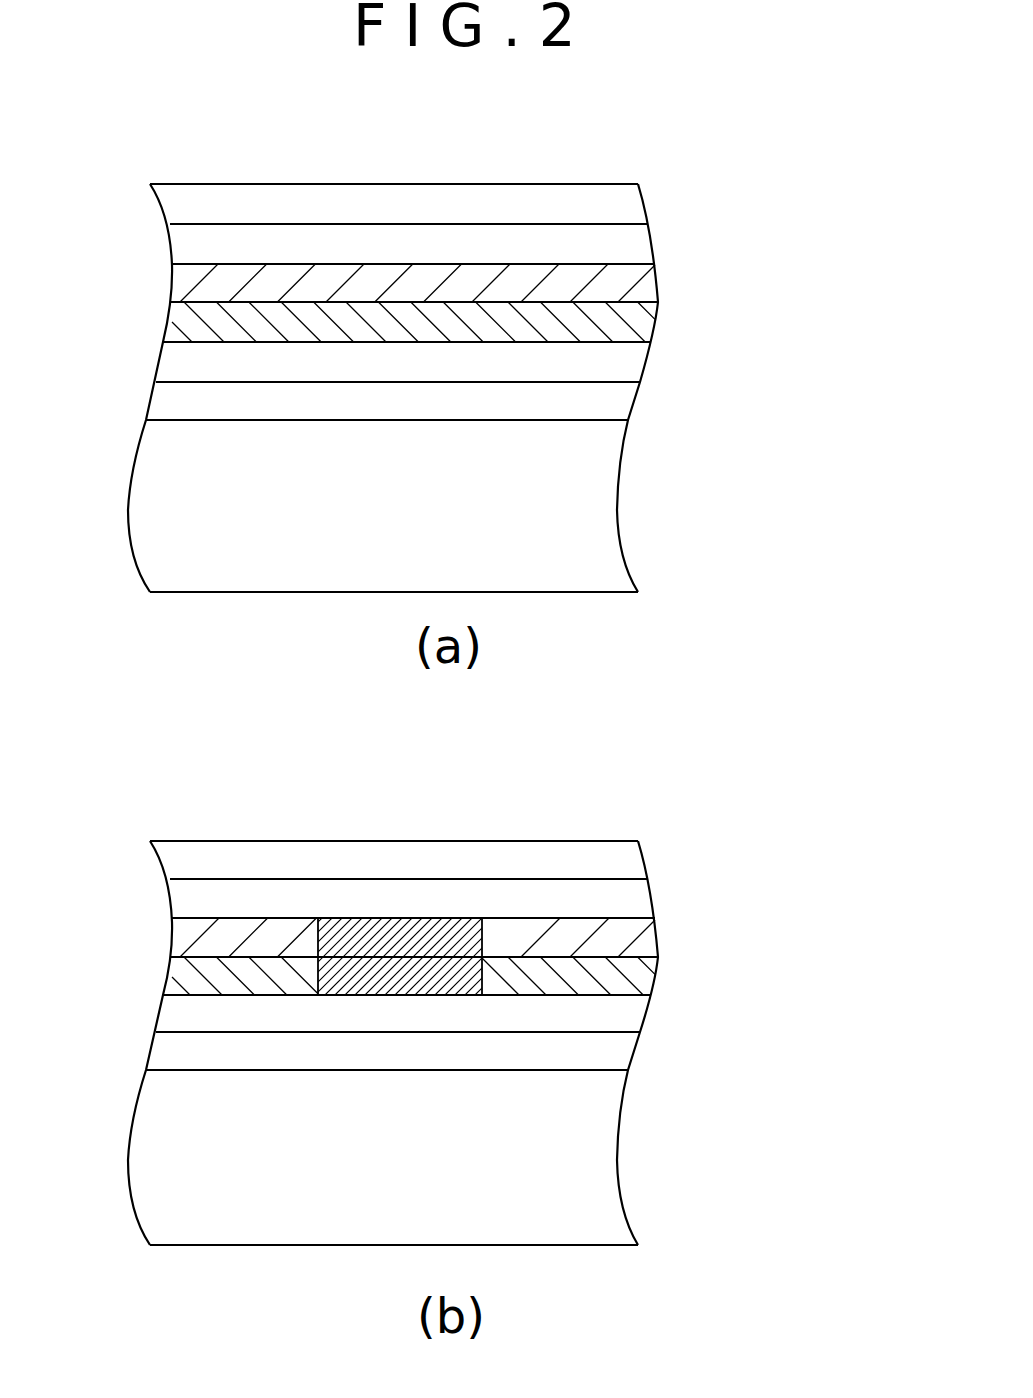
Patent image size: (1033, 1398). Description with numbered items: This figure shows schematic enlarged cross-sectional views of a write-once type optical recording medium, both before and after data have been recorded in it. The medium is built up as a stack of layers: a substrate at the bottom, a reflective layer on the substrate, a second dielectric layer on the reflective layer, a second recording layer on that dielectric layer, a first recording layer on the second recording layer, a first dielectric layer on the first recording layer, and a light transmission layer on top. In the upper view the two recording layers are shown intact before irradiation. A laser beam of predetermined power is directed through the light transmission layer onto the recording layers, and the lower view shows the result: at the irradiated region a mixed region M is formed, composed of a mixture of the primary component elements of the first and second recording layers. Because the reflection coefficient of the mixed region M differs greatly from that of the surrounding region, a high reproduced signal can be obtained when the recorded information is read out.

The mixed region M is at (405, 912).